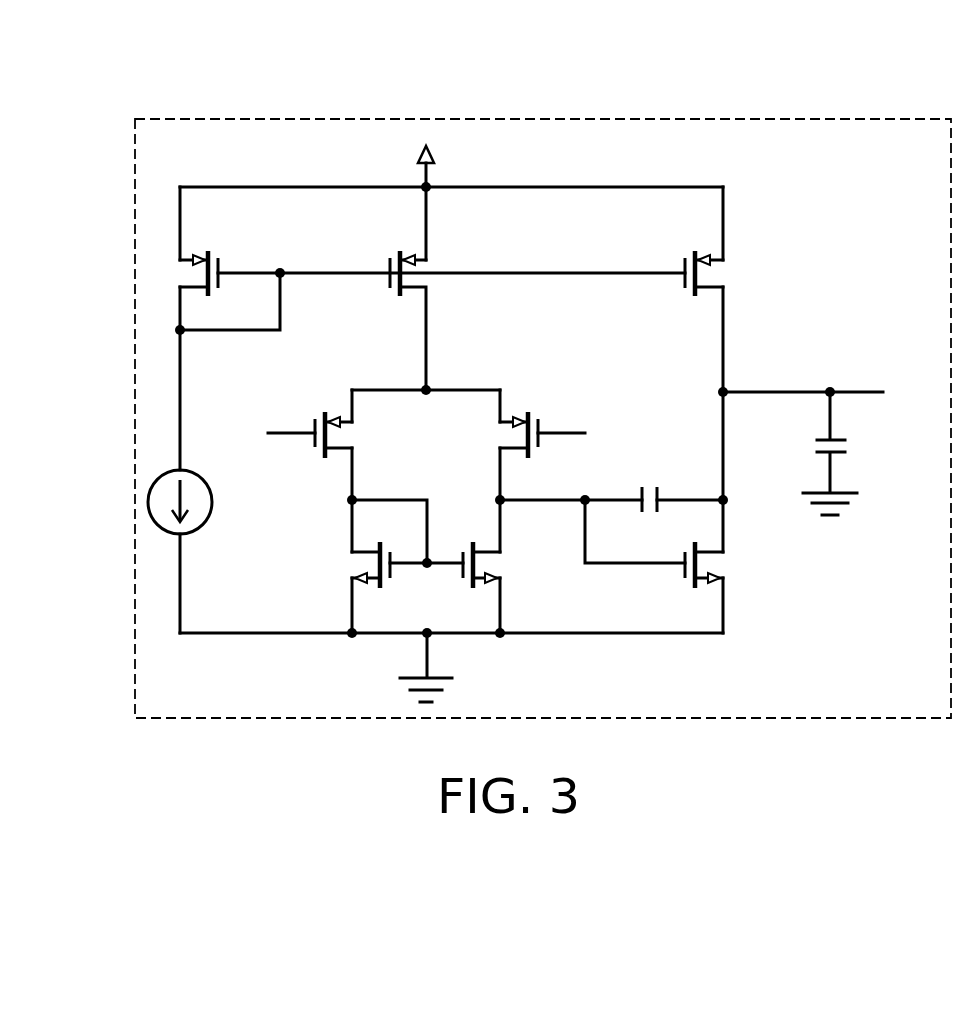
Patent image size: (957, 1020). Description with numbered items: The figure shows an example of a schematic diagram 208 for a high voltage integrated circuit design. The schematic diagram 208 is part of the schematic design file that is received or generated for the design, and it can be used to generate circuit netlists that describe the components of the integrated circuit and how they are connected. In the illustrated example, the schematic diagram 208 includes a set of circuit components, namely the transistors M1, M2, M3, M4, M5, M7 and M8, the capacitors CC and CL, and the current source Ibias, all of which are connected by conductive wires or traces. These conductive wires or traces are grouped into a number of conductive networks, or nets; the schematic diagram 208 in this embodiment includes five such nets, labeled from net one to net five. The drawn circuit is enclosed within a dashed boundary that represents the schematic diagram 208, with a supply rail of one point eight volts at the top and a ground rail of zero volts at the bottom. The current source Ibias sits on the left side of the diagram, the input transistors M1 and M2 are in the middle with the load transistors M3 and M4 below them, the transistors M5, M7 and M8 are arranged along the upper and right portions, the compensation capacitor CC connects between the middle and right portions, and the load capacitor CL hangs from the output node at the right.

The schematic diagram 208 is at (122, 112).
The circuit component M1 is at (347, 435).
The circuit component M2 is at (505, 435).
The circuit component M3 is at (356, 565).
The circuit component M4 is at (497, 565).
The circuit component M5 is at (571, 415).
The circuit component M7 is at (721, 273).
The circuit component M8 is at (181, 273).
The circuit component CC is at (648, 483).
The circuit component CL is at (839, 453).
The circuit component Ibias is at (206, 502).